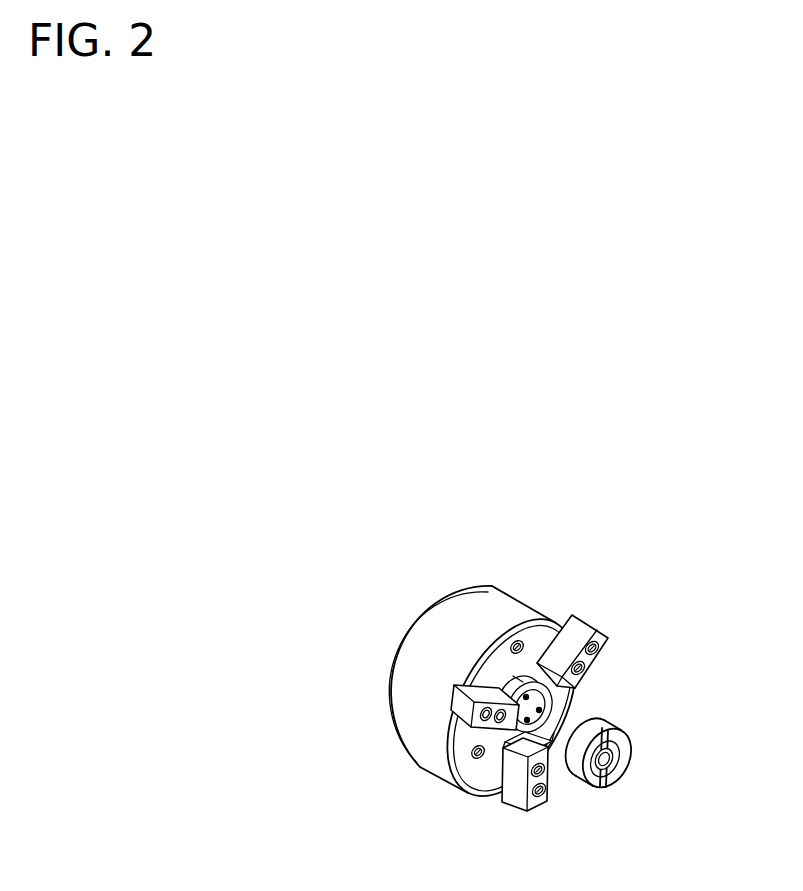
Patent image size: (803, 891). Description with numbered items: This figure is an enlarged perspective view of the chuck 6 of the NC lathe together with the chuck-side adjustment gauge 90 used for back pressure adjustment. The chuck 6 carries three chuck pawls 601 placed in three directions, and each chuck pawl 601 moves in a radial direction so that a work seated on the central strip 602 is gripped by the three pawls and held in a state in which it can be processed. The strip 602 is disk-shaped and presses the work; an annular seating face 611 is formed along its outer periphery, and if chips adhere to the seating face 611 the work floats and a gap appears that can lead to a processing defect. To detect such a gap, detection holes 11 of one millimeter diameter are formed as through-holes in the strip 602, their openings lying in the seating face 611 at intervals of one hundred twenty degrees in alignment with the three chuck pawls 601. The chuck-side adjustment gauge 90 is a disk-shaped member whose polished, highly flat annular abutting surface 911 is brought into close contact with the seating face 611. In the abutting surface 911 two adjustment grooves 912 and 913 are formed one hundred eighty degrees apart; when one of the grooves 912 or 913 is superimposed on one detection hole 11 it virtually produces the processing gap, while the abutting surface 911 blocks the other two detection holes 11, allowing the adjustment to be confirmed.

The chuck 6 is at (472, 674).
The strip 602 is at (490, 650).
The chuck pawls 601 is at (508, 721).
The seating face 611 is at (551, 746).
The detection holes 11 is at (566, 703).
The chuck-side adjustment gauge 90 is at (640, 763).
The adjustment groove 913 is at (621, 727).
The abutting surface 911 is at (617, 768).
The adjustment groove 912 is at (611, 786).